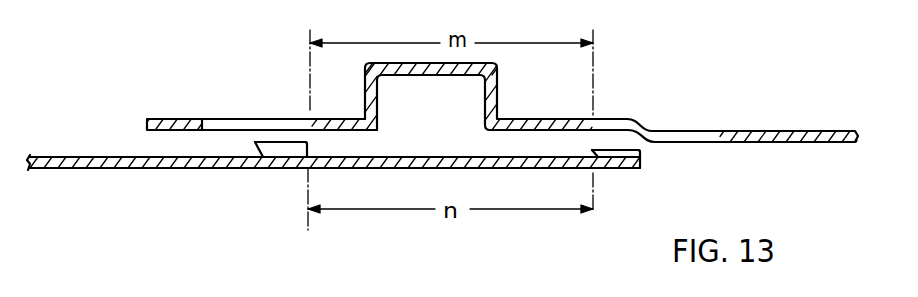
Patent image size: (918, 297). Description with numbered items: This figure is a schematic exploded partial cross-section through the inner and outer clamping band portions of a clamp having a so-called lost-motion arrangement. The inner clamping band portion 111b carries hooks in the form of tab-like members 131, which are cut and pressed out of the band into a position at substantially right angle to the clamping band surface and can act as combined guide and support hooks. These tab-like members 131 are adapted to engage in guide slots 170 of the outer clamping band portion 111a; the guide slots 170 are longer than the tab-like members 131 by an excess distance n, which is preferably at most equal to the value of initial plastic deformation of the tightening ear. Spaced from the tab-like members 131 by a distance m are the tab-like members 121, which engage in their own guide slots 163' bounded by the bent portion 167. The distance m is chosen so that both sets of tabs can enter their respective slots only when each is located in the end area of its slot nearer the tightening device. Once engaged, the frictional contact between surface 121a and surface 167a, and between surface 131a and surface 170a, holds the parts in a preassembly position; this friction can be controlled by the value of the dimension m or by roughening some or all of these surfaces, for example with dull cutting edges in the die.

The guide slot 170 is at (217, 124).
The surface 170a is at (307, 125).
The outer clamping band portion 111a is at (535, 118).
The inner clamping band portion 111b is at (118, 168).
The tab-like member 131 is at (283, 152).
The surface 131a is at (308, 150).
The tab-like member 121 is at (643, 153).
The surface 121a is at (577, 160).
The bent portion 167 is at (645, 127).
The surface 167a is at (610, 121).
The guide slot 163' is at (755, 110).